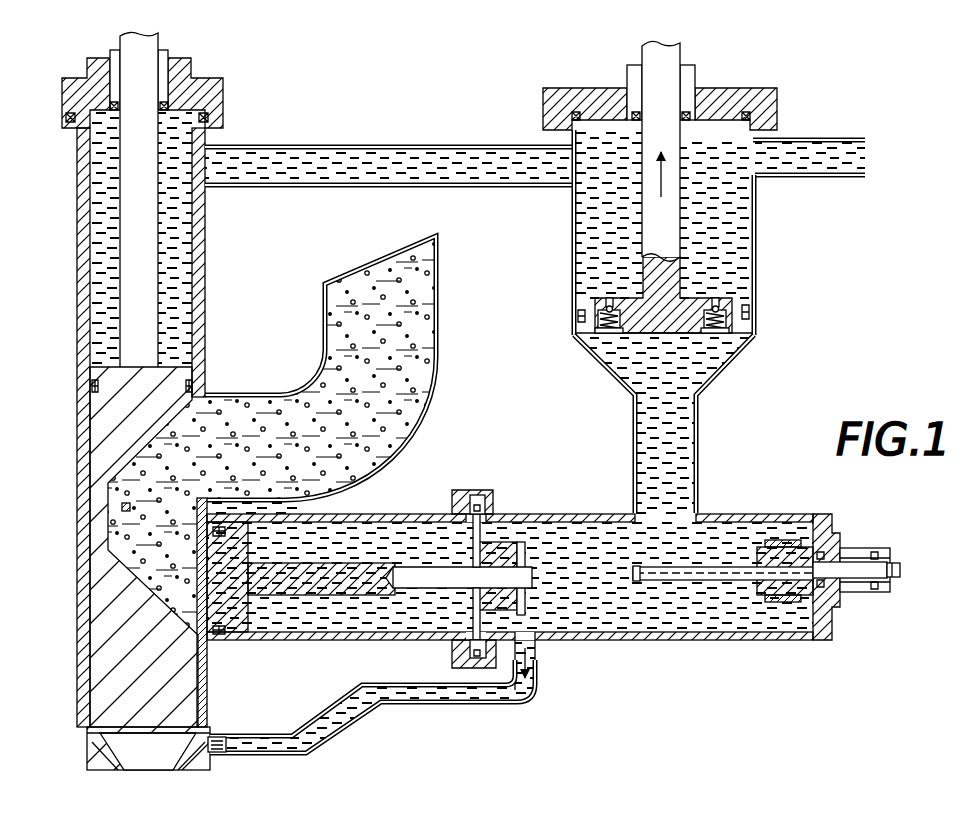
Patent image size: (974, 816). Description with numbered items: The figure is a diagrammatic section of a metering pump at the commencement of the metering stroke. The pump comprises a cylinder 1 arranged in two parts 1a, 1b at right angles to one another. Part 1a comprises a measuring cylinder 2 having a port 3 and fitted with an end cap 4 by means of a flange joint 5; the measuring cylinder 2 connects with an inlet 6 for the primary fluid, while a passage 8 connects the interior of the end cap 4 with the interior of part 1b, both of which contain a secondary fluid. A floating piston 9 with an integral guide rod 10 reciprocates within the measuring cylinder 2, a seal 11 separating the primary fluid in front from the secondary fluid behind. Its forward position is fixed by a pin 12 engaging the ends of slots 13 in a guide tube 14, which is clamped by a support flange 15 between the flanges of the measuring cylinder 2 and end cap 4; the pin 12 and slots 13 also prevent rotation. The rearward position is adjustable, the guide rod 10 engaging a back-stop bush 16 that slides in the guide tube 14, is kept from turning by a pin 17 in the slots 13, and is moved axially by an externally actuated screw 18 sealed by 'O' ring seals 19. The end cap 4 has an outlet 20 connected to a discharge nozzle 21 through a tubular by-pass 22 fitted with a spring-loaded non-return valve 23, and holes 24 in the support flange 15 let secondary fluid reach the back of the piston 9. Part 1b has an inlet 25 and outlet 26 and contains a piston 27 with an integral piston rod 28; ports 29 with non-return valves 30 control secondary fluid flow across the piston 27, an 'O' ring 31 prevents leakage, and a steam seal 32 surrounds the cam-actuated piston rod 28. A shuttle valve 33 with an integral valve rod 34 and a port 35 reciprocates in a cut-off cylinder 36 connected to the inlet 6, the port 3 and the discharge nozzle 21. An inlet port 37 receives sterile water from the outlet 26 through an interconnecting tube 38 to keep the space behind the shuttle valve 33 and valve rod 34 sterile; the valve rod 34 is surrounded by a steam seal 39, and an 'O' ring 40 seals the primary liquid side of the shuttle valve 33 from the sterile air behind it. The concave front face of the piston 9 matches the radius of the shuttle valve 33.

The cylinder 1 is at (605, 492).
The first part of cylinder 1a is at (488, 480).
The second part of cylinder 1b is at (572, 222).
The measuring cylinder 2 is at (332, 516).
The port 3 is at (188, 585).
The end cap 4 is at (800, 514).
The flange joint 5 is at (468, 490).
The inlet 6 is at (235, 393).
The passage 8 is at (677, 518).
The floating piston 9 is at (255, 605).
The guide rod 10 is at (325, 600).
The seal 11 is at (222, 640).
The pin 12 is at (520, 540).
The slots 13 is at (560, 545).
The guide tube 14 is at (476, 604).
The support flange 15 is at (470, 510).
The back-stop bush 16 is at (792, 596).
The pin 17 is at (768, 603).
The screw 18 is at (845, 576).
The 'O' ring seals 19 is at (824, 554).
The outlet 20 is at (537, 658).
The discharge nozzle 21 is at (205, 766).
The tubular by-pass 22 is at (405, 700).
The non-return valve 23 is at (240, 745).
The holes 24 is at (468, 522).
The inlet 25 is at (826, 148).
The outlet 26 is at (590, 158).
The piston 27 is at (745, 318).
The piston rod 28 is at (690, 222).
The ports 29 is at (714, 300).
The non-return valves 30 is at (718, 332).
The 'O' ring 31 is at (578, 318).
The steam seal 32 is at (683, 72).
The shuttle valve 33 is at (115, 428).
The valve rod 34 is at (130, 253).
The port 35 is at (122, 508).
The cut-off cylinder 36 is at (86, 326).
The inlet port 37 is at (182, 172).
The interconnecting tube 38 is at (397, 160).
The steam seal 39 is at (160, 64).
The 'O' ring 40 is at (92, 387).